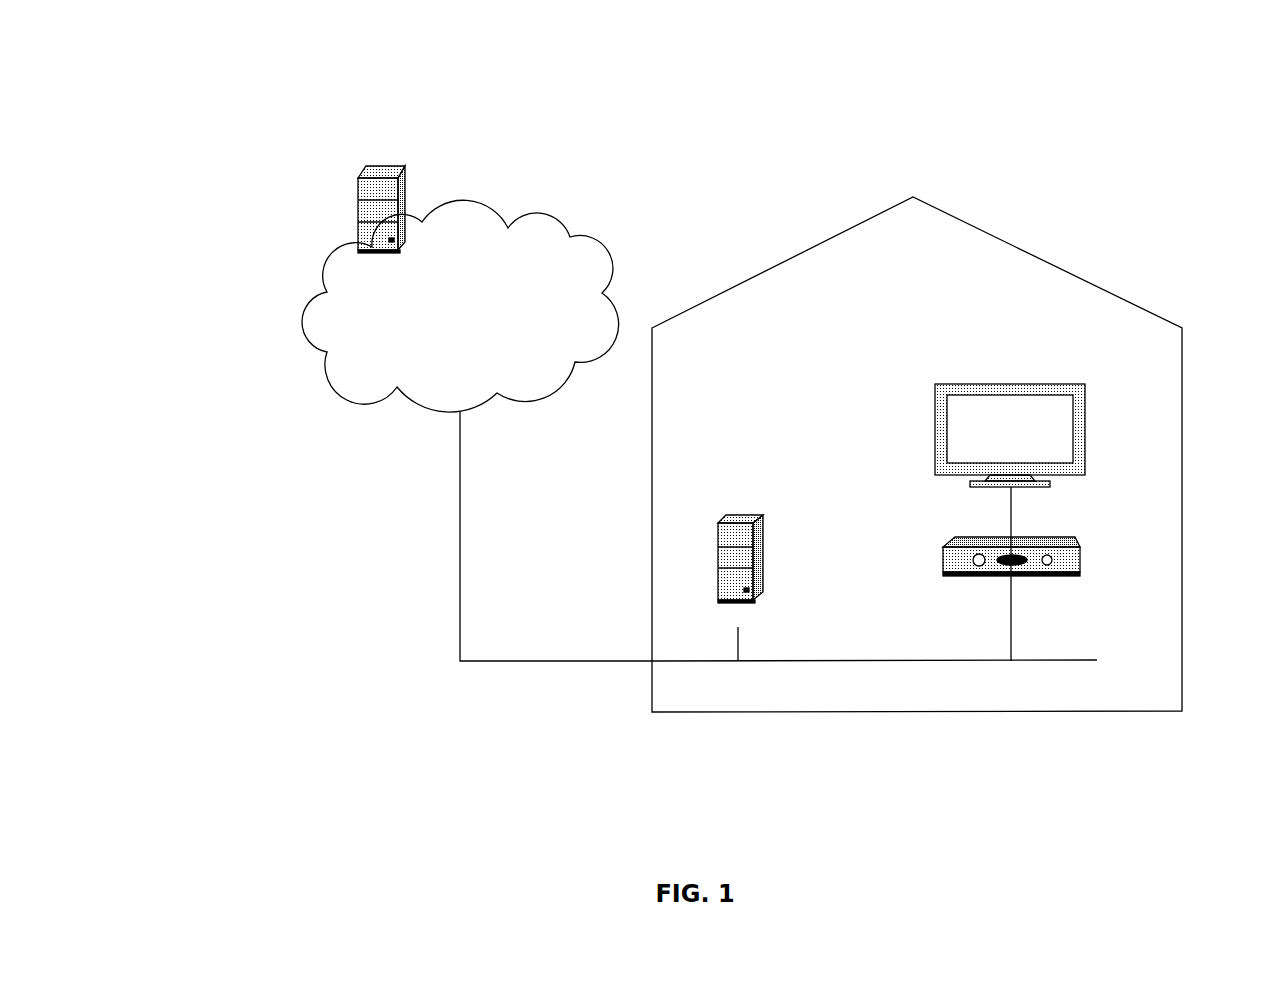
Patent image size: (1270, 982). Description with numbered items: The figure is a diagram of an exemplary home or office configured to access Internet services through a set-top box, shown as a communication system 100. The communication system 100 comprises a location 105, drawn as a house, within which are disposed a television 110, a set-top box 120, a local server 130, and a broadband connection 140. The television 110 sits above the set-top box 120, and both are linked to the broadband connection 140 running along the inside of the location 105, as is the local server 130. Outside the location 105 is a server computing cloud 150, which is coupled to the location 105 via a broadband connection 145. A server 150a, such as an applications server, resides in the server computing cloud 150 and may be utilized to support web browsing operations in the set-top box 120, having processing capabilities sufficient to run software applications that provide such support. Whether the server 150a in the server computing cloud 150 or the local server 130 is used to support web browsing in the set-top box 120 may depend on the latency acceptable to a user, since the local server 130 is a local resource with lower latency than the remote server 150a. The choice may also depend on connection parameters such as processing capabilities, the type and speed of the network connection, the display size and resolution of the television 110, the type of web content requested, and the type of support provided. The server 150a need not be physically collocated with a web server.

The communication system 100 is at (226, 110).
The location 105 is at (1182, 430).
The television 110 is at (1087, 408).
The set-top box 120 is at (1082, 557).
The local server 130 is at (765, 540).
The broadband connection 140 is at (873, 661).
The broadband connection 145 is at (533, 662).
The server computing cloud 150 is at (617, 268).
The server 150a is at (405, 190).